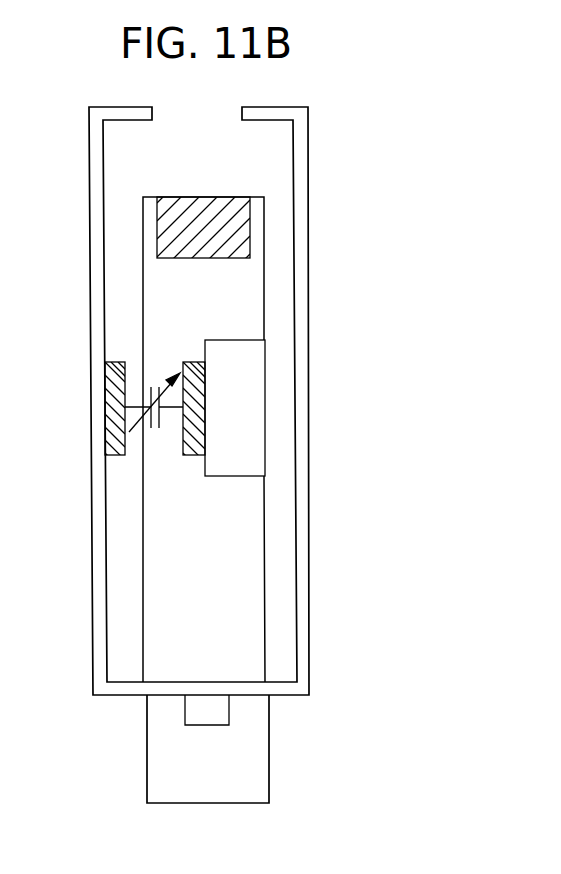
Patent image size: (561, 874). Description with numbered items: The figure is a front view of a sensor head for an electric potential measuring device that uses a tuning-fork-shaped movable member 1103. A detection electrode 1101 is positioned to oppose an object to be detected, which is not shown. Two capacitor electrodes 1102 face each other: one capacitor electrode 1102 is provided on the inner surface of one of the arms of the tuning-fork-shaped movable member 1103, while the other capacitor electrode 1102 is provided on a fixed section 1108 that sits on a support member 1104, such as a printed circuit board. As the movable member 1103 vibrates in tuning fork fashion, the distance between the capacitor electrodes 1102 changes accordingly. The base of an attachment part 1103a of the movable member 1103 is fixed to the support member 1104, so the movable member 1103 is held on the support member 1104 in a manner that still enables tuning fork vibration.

The detection electrode 1101 is at (247, 215).
The capacitor electrodes 1102 is at (123, 368).
The tuning-fork-shaped movable member 1103 is at (302, 433).
The attachment part 1103a is at (218, 707).
The support member 1104 is at (249, 652).
The fixed section 1108 is at (252, 460).